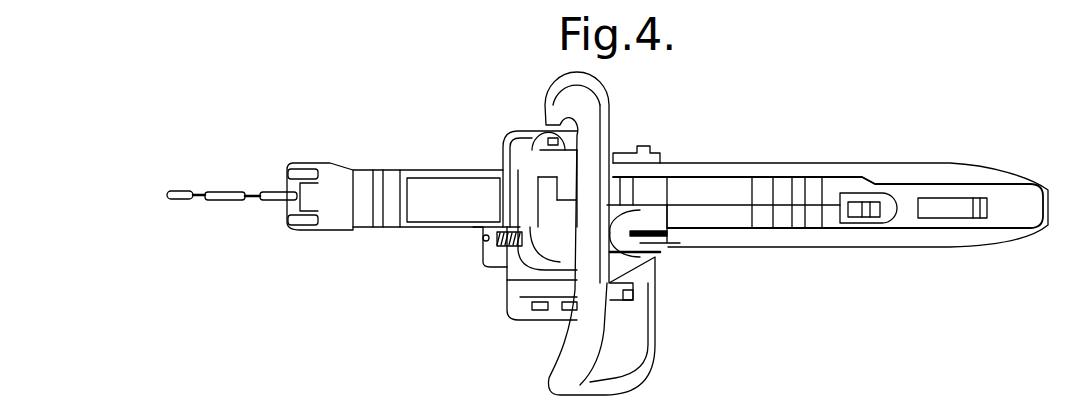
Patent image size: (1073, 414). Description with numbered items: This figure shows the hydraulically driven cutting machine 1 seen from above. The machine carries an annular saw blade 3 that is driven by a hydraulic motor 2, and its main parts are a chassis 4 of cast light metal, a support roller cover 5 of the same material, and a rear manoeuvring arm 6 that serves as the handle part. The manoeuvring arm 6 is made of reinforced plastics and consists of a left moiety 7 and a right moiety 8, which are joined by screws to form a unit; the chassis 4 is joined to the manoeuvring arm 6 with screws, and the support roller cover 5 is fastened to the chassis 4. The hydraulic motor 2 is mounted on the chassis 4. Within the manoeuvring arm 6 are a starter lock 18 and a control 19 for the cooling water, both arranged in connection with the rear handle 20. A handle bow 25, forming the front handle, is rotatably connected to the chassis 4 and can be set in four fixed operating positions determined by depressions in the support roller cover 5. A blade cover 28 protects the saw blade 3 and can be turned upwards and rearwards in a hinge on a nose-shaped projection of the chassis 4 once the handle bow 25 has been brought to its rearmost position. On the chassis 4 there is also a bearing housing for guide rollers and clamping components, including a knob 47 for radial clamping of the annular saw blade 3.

The cutting machine 1 is at (684, 132).
The hydraulic motor 2 is at (512, 298).
The annular saw blade 3 is at (235, 188).
The chassis 4 is at (503, 270).
The support roller cover 5 is at (522, 150).
The manoeuvring arm 6 is at (767, 163).
The left moiety 7 is at (777, 240).
The right moiety 8 is at (828, 167).
The starter lock 18 is at (950, 208).
The control for cooling water 19 is at (860, 210).
The rear handle 20 is at (907, 203).
The handle bow 25 is at (600, 132).
The blade cover 28 is at (335, 192).
The knob 47 is at (660, 250).